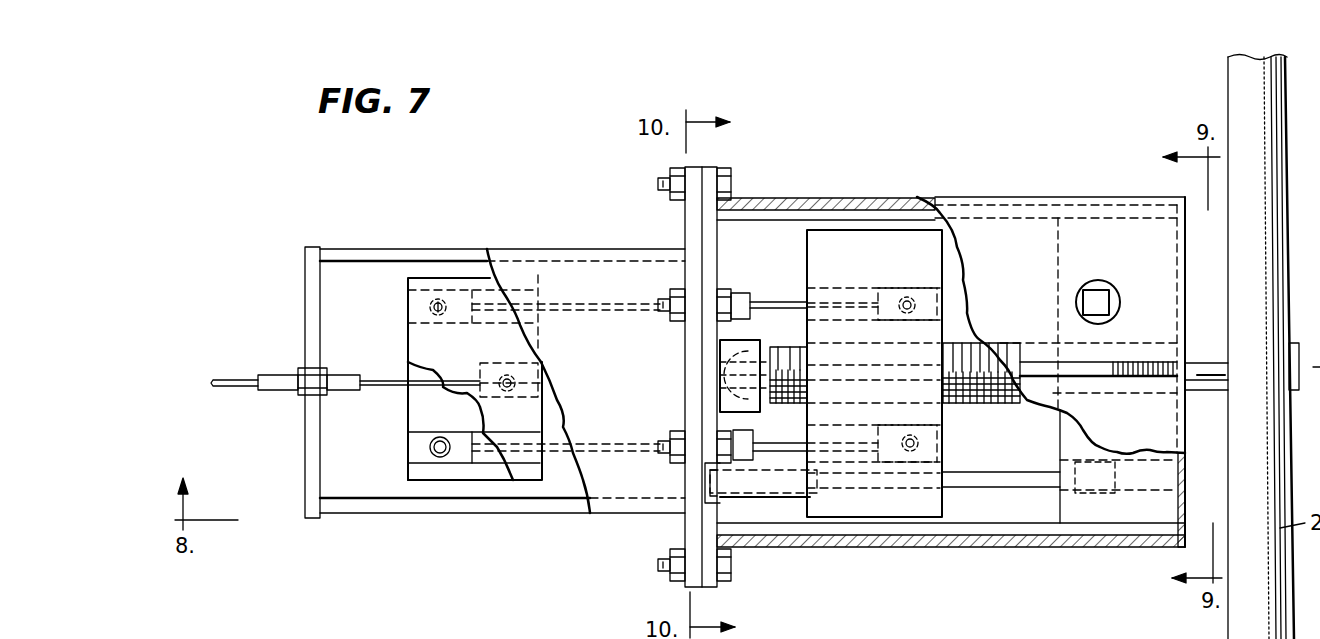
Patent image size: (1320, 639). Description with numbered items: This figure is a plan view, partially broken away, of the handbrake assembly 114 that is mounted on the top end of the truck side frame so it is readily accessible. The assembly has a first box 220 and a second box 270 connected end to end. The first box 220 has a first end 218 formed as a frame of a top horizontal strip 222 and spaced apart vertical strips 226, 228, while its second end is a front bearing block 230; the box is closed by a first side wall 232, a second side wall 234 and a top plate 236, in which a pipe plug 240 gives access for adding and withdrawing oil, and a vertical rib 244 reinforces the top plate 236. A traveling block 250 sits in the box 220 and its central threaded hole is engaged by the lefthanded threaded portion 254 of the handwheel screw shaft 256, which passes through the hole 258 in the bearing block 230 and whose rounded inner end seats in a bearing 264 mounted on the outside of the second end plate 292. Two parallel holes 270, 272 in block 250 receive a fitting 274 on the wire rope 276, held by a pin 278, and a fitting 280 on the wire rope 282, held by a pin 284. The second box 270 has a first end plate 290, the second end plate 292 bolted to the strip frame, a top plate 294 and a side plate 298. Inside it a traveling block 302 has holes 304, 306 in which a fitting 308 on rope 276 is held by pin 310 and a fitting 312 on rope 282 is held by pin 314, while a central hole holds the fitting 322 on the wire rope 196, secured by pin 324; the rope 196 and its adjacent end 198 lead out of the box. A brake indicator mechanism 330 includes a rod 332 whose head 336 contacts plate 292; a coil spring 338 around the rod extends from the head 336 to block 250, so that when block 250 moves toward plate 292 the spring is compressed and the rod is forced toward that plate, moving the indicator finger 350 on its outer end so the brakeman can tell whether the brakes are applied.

The handbrake assembly 114 is at (616, 197).
The wire rope 196 is at (318, 370).
The rod end 198 is at (226, 379).
The first end 218 is at (732, 274).
The first box 220 is at (933, 175).
The top horizontal strip 222 is at (712, 240).
The vertical strip 226 is at (705, 177).
The vertical strip 228 is at (712, 585).
The front bearing block 230 is at (1083, 233).
The first side wall 232 is at (992, 215).
The second side wall 234 is at (982, 533).
The top plate 236 is at (1020, 281).
The pipe plug 240 is at (1103, 298).
The vertical rib 244 is at (1025, 363).
The traveling block 250 is at (843, 250).
The lefthanded threaded portion 254 is at (1020, 400).
The handwheel screw shaft 256 is at (1212, 338).
The hole 258 is at (1146, 395).
The bearing 264 is at (740, 402).
The second box 270 is at (432, 236).
The hole 272 is at (827, 432).
The fitting 274 is at (888, 313).
The wire rope 276 is at (583, 312).
The pin 278 is at (912, 313).
The fitting 280 is at (942, 436).
The wire rope 282 is at (588, 447).
The pin 284 is at (942, 450).
The first end plate 290 is at (318, 430).
The second end plate 292 is at (691, 338).
The top plate 294 is at (377, 305).
The side plate 298 is at (358, 248).
The traveling block 302 is at (450, 482).
The hole 304 is at (530, 302).
The hole 306 is at (530, 440).
The fitting 308 is at (413, 312).
The pin 310 is at (437, 318).
The fitting 312 is at (417, 441).
The pin 314 is at (430, 450).
The fitting 322 is at (485, 366).
The pin 324 is at (506, 394).
The brake indicator mechanism 330 is at (1032, 505).
The rod 332 is at (955, 478).
The head 336 is at (712, 497).
The coil spring 338 is at (750, 493).
The indicator finger 350 is at (1165, 483).